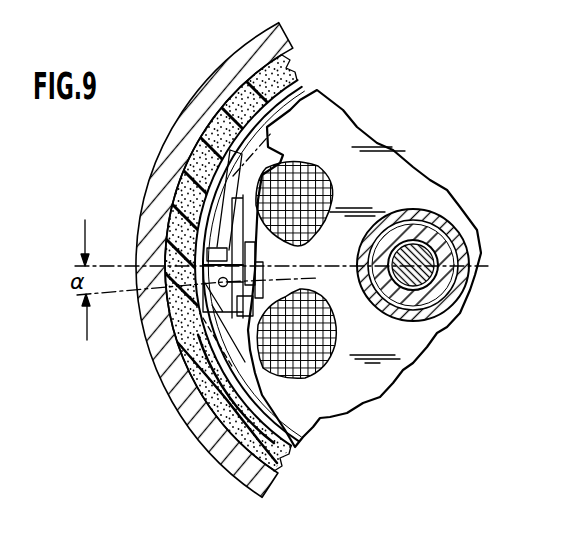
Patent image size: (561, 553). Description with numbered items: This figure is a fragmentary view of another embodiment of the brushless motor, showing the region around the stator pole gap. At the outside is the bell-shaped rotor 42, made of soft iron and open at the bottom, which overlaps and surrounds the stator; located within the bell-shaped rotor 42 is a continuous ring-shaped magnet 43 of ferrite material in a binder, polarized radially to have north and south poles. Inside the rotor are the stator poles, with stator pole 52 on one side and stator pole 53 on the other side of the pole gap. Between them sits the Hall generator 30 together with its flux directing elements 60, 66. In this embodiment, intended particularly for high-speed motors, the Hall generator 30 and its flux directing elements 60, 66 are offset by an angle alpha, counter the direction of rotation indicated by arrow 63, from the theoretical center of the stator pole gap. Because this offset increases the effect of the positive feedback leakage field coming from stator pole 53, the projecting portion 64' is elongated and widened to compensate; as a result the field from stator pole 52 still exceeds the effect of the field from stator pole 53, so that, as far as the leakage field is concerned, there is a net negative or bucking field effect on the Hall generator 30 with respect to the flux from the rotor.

The Hall generator 30 is at (305, 280).
The bell-shaped rotor 42 is at (263, 494).
The ring-shaped magnet 43 is at (284, 64).
The stator pole 52 is at (327, 97).
The stator pole 53 is at (326, 424).
The flux directing element 60 is at (207, 247).
The arrow indicating direction of rotation 63 is at (213, 119).
The projecting portion 64' is at (283, 187).
The flux directing element 66 is at (222, 287).